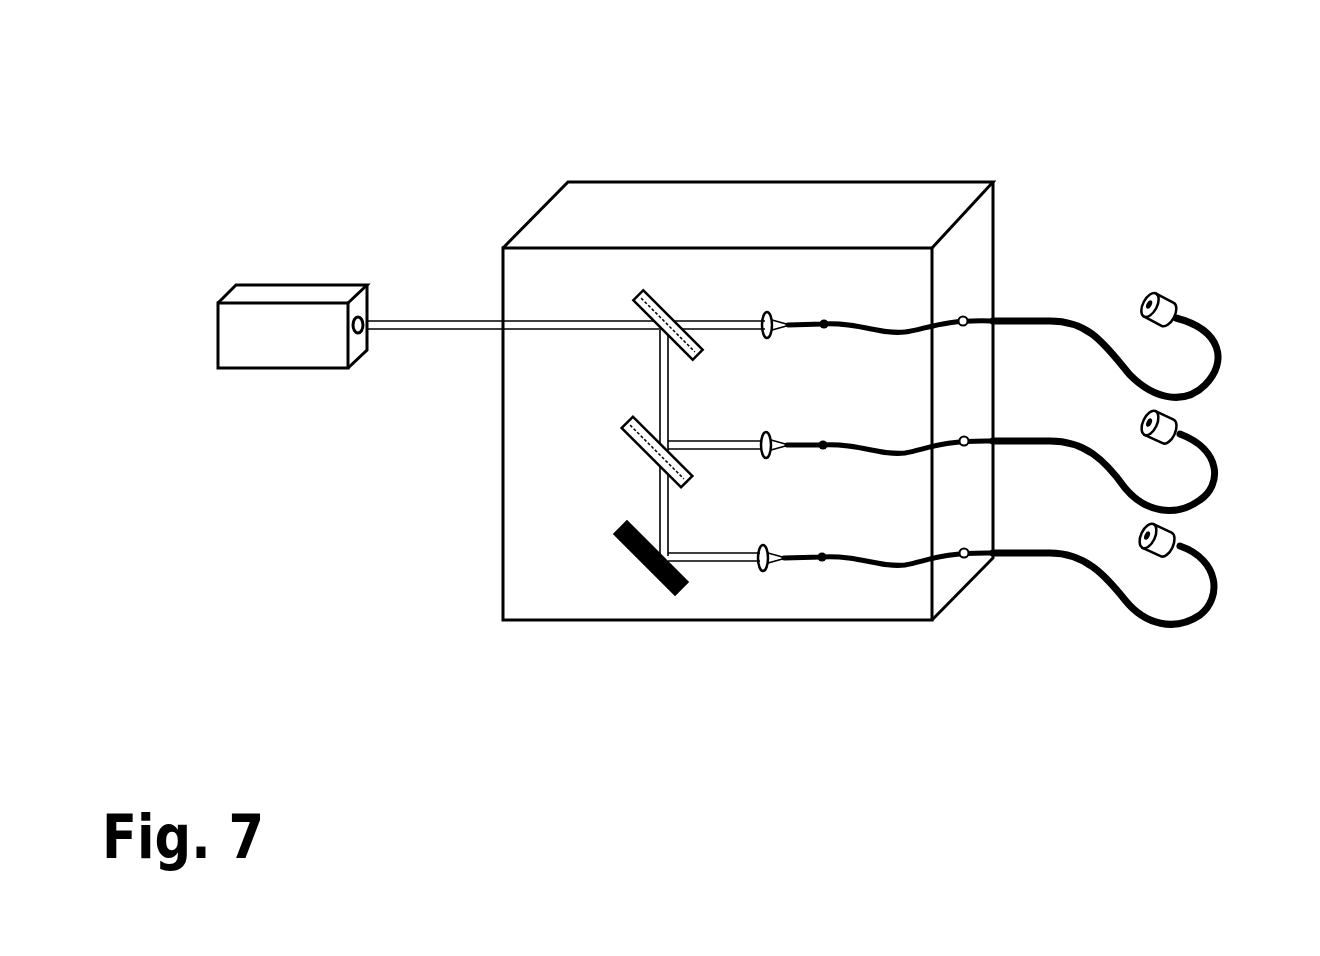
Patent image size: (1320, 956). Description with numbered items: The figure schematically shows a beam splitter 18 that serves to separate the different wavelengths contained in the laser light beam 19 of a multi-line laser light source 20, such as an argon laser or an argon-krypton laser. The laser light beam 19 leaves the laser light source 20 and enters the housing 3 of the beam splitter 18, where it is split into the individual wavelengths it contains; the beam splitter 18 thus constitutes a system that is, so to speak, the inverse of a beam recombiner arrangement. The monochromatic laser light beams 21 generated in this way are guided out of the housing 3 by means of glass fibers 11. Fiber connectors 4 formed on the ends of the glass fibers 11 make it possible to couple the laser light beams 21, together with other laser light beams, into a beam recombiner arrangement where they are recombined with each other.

The housing 3 is at (763, 182).
The fiber connectors 4 is at (1178, 298).
The glass fibers 11 is at (1172, 632).
The beam splitter 18 is at (478, 535).
The laser light beam 19 is at (415, 322).
The multi-line laser light source 20 is at (249, 333).
The monochromatic laser light beams 21 is at (736, 323).